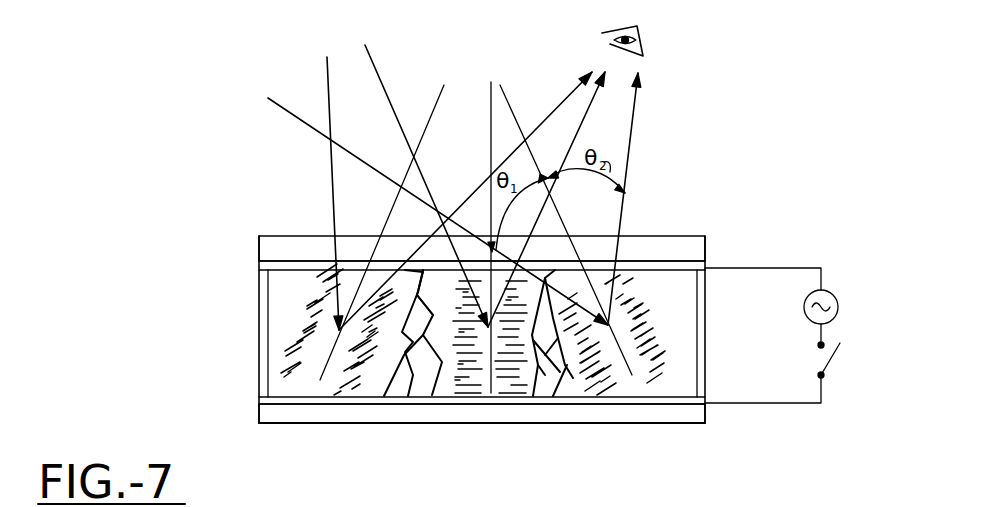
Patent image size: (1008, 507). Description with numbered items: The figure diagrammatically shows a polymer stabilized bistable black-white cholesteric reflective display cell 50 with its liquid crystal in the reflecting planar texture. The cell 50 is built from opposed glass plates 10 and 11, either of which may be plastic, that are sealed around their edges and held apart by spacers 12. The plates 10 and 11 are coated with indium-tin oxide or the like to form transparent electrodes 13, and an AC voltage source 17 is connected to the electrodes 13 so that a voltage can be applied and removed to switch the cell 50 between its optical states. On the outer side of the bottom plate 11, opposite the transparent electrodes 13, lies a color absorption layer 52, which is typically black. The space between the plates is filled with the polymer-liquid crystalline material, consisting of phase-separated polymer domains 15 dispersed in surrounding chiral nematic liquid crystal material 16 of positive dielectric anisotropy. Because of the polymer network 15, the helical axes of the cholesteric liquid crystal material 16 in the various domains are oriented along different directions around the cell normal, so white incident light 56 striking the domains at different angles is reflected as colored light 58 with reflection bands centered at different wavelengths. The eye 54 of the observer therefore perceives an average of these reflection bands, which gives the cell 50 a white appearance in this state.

The glass plate 10 is at (690, 236).
The glass plate 11 is at (685, 415).
The spacers 12 is at (258, 295).
The transparent electrodes 13 is at (258, 264).
The polymer domains 15 is at (403, 387).
The chiral nematic liquid crystal material 16 is at (628, 392).
The AC voltage source 17 is at (838, 307).
The display cell 50 is at (228, 147).
The color absorption layer 52 is at (445, 427).
The eye 54 is at (610, 43).
The incident light 56 is at (327, 70).
The reflected light 58 is at (563, 100).